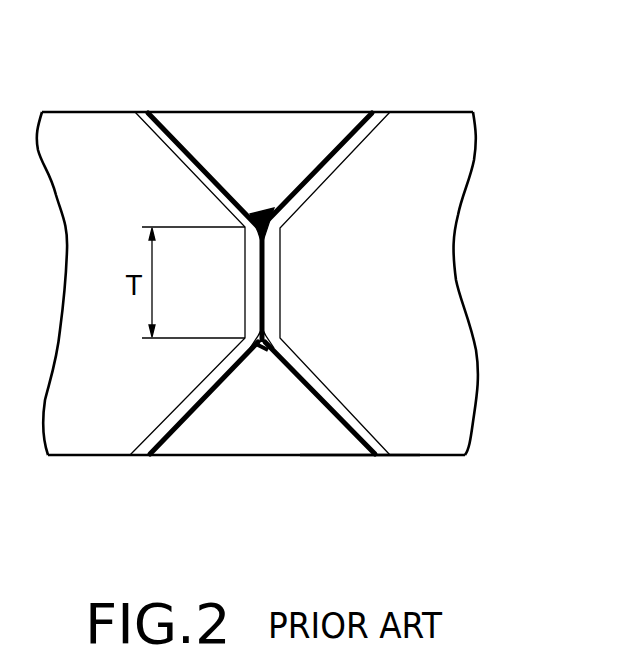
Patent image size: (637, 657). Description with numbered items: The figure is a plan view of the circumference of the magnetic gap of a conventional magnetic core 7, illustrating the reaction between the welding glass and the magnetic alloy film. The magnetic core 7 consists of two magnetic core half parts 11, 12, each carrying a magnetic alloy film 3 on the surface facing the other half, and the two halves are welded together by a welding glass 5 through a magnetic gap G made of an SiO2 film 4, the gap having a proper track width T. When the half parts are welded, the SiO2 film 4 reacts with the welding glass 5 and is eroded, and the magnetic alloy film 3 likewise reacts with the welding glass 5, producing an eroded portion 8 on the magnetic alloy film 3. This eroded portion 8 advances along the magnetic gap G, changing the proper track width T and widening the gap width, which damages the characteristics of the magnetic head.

The magnetic core half part 11 is at (78, 104).
The magnetic core half part 12 is at (468, 266).
The magnetic alloy film 3 is at (140, 114).
The welding glass 5 is at (210, 118).
The SiO2 film 4 is at (262, 293).
The eroded portion 8 is at (280, 222).
The magnetic core 7 is at (363, 459).